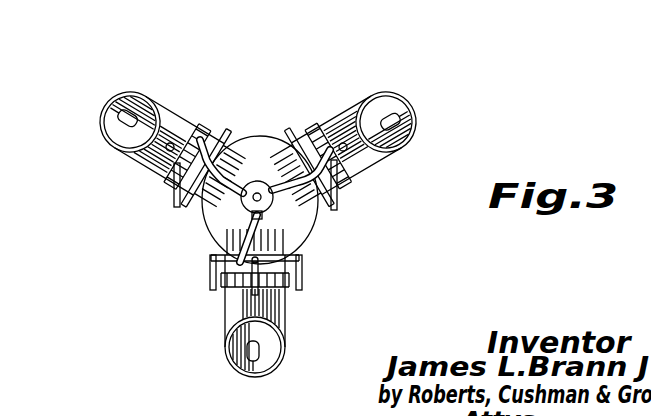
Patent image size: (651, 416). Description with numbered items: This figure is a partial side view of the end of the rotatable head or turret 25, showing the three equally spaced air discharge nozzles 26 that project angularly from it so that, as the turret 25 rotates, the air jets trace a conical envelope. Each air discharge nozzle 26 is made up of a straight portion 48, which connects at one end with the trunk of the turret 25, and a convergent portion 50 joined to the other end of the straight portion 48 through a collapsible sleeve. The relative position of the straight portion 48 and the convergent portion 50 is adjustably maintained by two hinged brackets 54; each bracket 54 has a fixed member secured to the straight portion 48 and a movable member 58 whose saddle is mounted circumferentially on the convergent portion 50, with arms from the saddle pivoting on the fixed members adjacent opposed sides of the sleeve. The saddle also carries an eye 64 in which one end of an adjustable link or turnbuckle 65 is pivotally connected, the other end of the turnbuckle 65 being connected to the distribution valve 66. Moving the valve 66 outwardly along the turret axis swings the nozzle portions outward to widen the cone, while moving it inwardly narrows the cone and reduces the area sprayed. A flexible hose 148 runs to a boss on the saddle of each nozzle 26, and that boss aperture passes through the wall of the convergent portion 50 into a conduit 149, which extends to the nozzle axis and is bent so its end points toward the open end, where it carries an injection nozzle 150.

The turret 25 is at (190, 250).
The air discharge nozzle 26 is at (167, 82).
The straight portion 48 is at (235, 147).
The convergent portion 50 is at (130, 157).
The hinged bracket 54 is at (180, 208).
The movable member 58 is at (208, 150).
The eye 64 is at (145, 170).
The turnbuckle 65 is at (283, 298).
The distribution valve 66 is at (257, 182).
The flexible hose 148 is at (228, 202).
The conduit 149 is at (143, 134).
The injection nozzle 150 is at (127, 110).